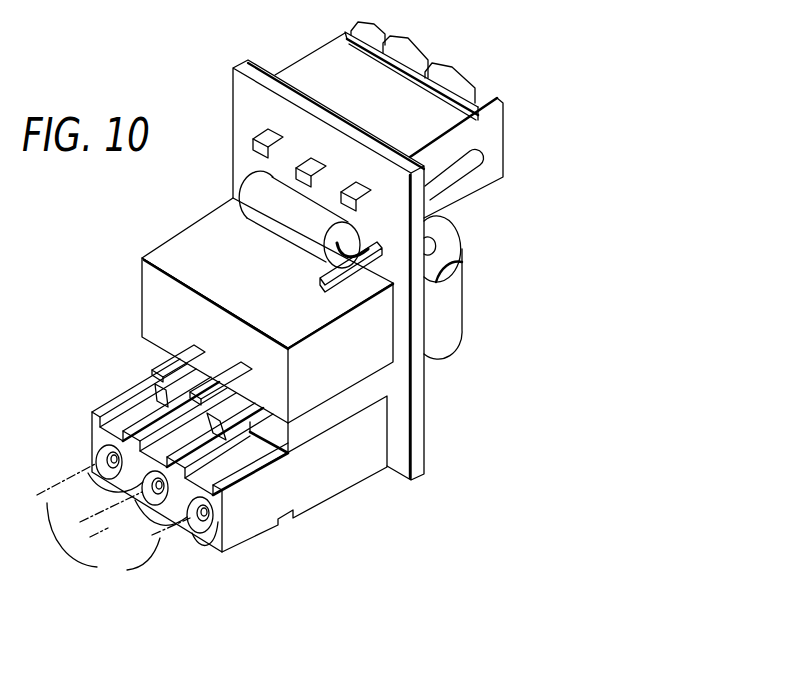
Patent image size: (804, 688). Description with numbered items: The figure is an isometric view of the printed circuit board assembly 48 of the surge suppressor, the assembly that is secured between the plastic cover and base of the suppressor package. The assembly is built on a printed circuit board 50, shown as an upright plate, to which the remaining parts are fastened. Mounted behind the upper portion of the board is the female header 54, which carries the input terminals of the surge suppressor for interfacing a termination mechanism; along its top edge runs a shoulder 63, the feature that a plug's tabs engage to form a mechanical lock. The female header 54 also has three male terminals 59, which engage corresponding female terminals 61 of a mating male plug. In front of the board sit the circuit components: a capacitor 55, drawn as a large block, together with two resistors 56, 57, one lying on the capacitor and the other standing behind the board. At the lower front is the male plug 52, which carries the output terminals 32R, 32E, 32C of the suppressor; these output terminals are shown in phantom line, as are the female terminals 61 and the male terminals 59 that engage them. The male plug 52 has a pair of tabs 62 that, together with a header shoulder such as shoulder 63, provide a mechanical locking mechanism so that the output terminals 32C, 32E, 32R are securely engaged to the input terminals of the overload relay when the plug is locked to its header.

The printed circuit board assembly 48 is at (466, 531).
The printed circuit board 50 is at (250, 66).
The male plug 52 is at (253, 522).
The female header 54 is at (484, 182).
The capacitor 55 is at (186, 242).
The resistor 56 is at (300, 247).
The resistor 57 is at (456, 317).
The male terminals 59 is at (103, 547).
The female terminals 61 is at (100, 461).
The tabs 62 is at (231, 418).
The shoulder 63 is at (352, 30).
The output terminal 32R is at (97, 451).
The output terminal 32E is at (150, 505).
The output terminal 32C is at (203, 534).